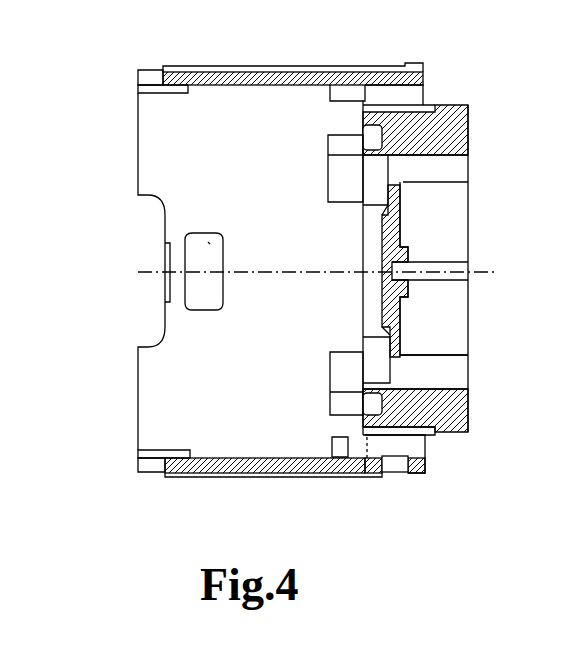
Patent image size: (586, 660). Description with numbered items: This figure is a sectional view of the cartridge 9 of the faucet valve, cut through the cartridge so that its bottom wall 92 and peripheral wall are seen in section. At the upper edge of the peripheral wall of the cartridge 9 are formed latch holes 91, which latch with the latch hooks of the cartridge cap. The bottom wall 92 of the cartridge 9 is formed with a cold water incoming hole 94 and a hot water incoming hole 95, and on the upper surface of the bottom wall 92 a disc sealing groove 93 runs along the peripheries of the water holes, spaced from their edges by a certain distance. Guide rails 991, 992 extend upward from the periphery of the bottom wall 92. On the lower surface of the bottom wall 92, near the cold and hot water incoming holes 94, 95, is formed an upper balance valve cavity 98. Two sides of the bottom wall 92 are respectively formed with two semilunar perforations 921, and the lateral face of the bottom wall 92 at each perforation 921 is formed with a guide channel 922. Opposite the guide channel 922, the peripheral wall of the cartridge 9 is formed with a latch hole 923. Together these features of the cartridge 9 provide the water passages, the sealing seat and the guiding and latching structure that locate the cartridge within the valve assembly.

The cartridge 9 is at (128, 378).
The latch hole 91 is at (208, 253).
The bottom wall 92 is at (448, 127).
The disc sealing groove 93 is at (373, 138).
The cold water incoming hole 94 is at (378, 363).
The hot water incoming hole 95 is at (380, 183).
The upper balance valve cavity 98 is at (440, 232).
The semilunar perforation 921 is at (412, 450).
The guide channel 922 is at (430, 435).
The latch hole 923 is at (395, 465).
The guide rail 991 is at (340, 178).
The guide rail 992 is at (332, 97).